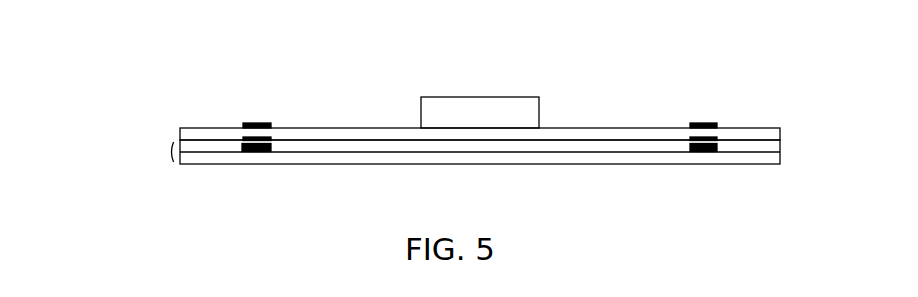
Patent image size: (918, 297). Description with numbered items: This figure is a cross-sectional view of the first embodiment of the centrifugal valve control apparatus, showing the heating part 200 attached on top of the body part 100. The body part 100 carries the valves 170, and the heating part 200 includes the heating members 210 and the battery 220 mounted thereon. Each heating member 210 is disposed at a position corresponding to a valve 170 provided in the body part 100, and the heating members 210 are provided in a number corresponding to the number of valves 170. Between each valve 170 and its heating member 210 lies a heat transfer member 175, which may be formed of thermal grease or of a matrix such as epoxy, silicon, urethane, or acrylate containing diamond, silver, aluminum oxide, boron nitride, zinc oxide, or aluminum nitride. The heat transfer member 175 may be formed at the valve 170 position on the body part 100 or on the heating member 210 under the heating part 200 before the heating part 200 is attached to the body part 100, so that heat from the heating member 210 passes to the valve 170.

The body part 100 is at (170, 152).
The heating part 200 is at (178, 136).
The valve 170 is at (262, 153).
The heat transfer member 175 is at (247, 138).
The heating member 210 is at (256, 123).
The battery 220 is at (479, 106).